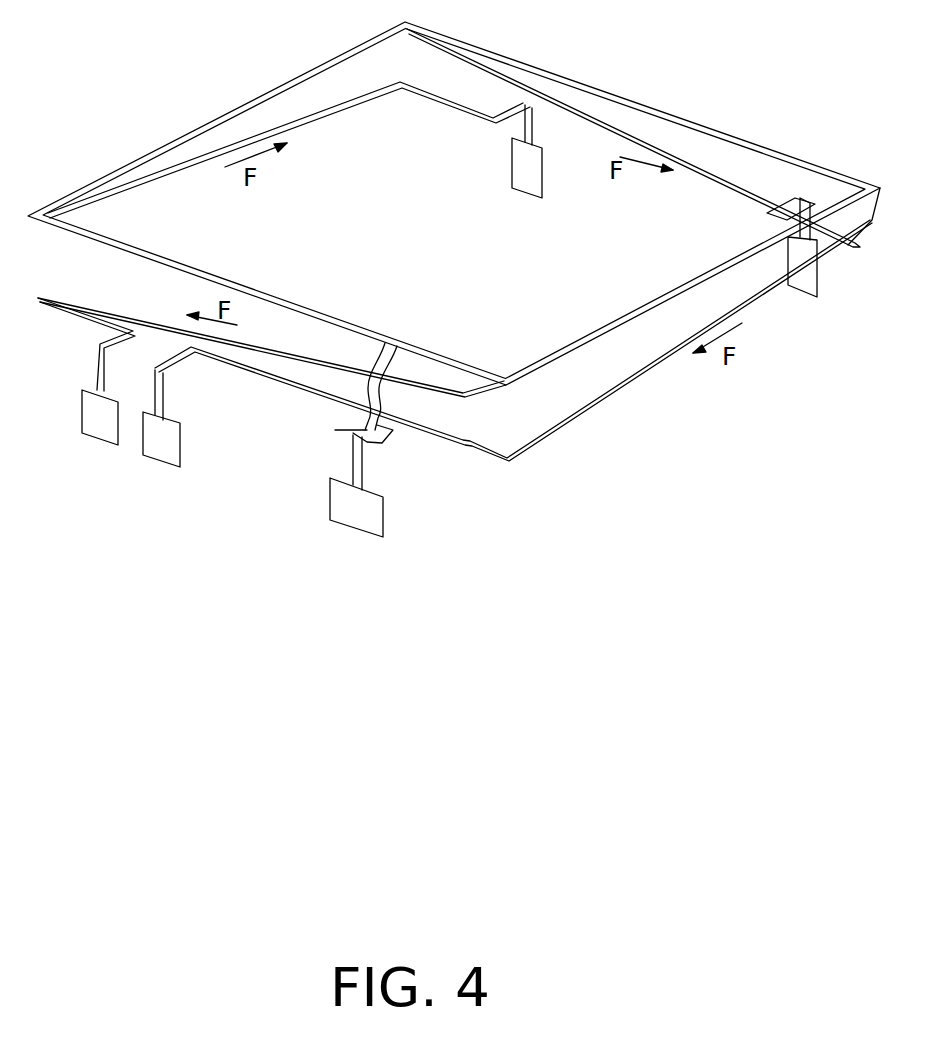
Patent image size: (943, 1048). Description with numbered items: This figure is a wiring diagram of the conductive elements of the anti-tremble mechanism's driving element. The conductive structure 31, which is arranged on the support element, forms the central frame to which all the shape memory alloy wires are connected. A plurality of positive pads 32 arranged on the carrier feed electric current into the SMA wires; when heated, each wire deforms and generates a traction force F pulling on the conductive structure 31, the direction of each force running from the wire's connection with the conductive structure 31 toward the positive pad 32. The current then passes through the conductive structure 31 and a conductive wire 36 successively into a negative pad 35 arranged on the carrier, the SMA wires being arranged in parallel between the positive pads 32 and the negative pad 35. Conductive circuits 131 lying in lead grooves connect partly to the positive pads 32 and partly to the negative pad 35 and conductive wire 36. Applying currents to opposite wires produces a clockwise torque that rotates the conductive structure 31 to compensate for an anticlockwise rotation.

The conductive structure 31 is at (672, 292).
The positive pads 32 is at (165, 455).
The negative pad 35 is at (372, 520).
The conductive wire 36 is at (383, 362).
The conductive circuits 131 is at (292, 383).